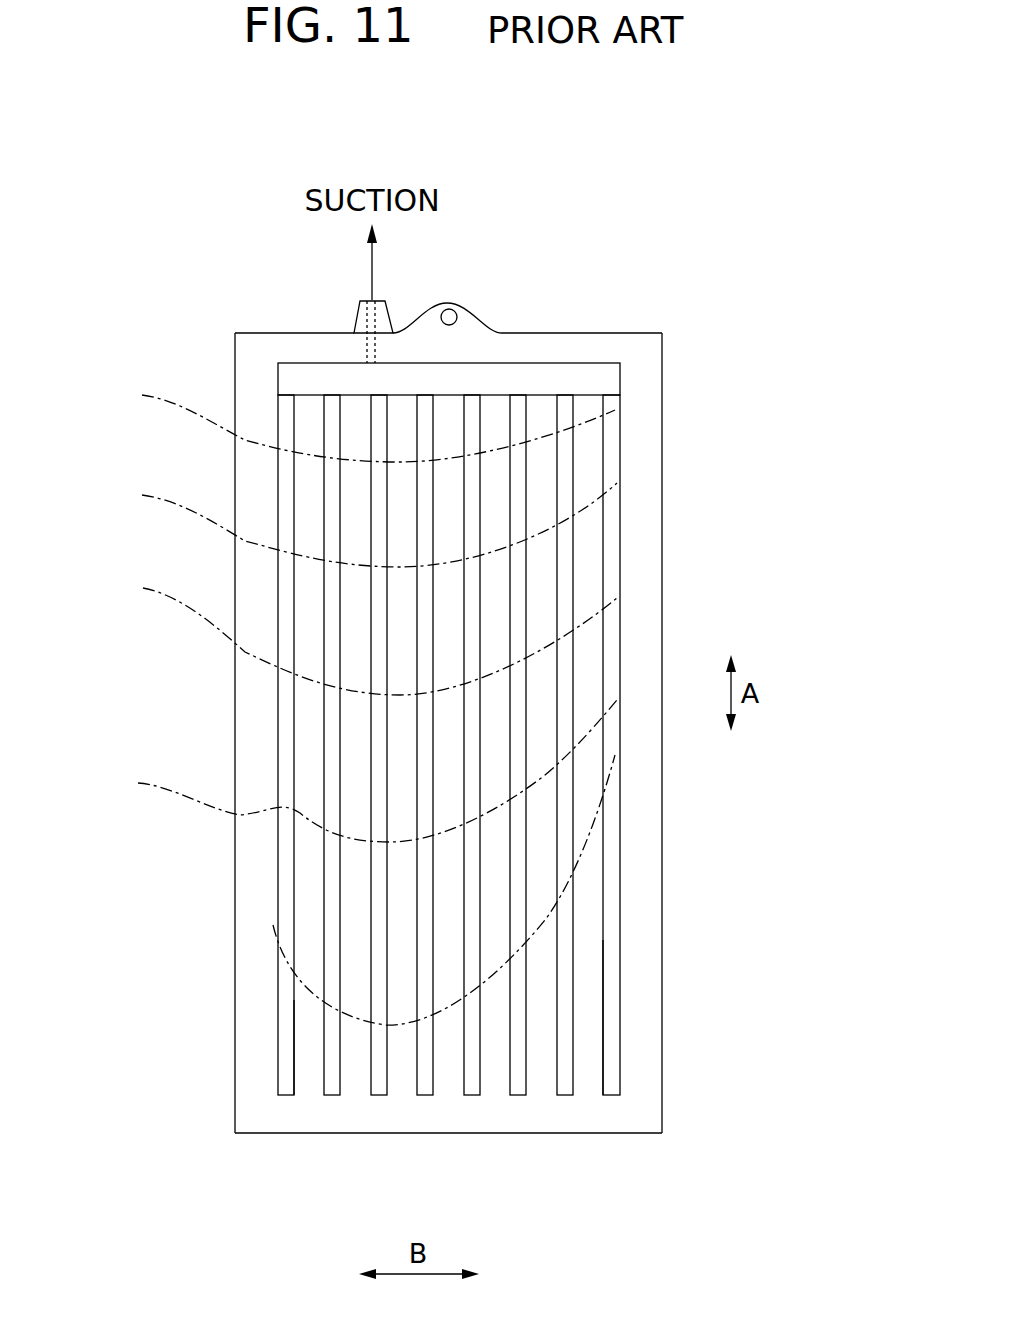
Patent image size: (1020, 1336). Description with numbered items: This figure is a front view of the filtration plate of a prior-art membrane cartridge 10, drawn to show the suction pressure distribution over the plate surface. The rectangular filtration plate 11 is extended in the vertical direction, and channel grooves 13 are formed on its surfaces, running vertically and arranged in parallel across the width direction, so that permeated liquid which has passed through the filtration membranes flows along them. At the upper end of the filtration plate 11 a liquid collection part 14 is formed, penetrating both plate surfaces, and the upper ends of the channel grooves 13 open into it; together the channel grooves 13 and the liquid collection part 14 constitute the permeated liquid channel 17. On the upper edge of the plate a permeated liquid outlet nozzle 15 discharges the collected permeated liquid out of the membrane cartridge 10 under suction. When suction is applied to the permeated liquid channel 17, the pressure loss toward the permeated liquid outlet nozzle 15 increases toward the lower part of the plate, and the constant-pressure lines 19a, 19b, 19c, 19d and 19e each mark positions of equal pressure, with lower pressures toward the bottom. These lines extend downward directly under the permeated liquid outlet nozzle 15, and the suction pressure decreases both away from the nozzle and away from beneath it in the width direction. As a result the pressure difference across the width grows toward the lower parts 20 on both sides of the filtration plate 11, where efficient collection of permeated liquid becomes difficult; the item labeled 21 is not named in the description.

The membrane cartridge 10 is at (623, 322).
The filtration plate 11 is at (663, 592).
The channel grooves 13 is at (473, 477).
The liquid collection part 14 is at (545, 380).
The permeated liquid outlet nozzle 15 is at (354, 315).
The permeated liquid channel 17 is at (485, 223).
The constant-pressure line 19a is at (351, 423).
The constant-pressure line 19b is at (352, 524).
The constant-pressure line 19c is at (352, 636).
The constant-pressure line 19d is at (351, 771).
The constant-pressure line 19e is at (590, 852).
The lower parts 20 is at (300, 1016).
The gap between electrodes 21 is at (395, 993).